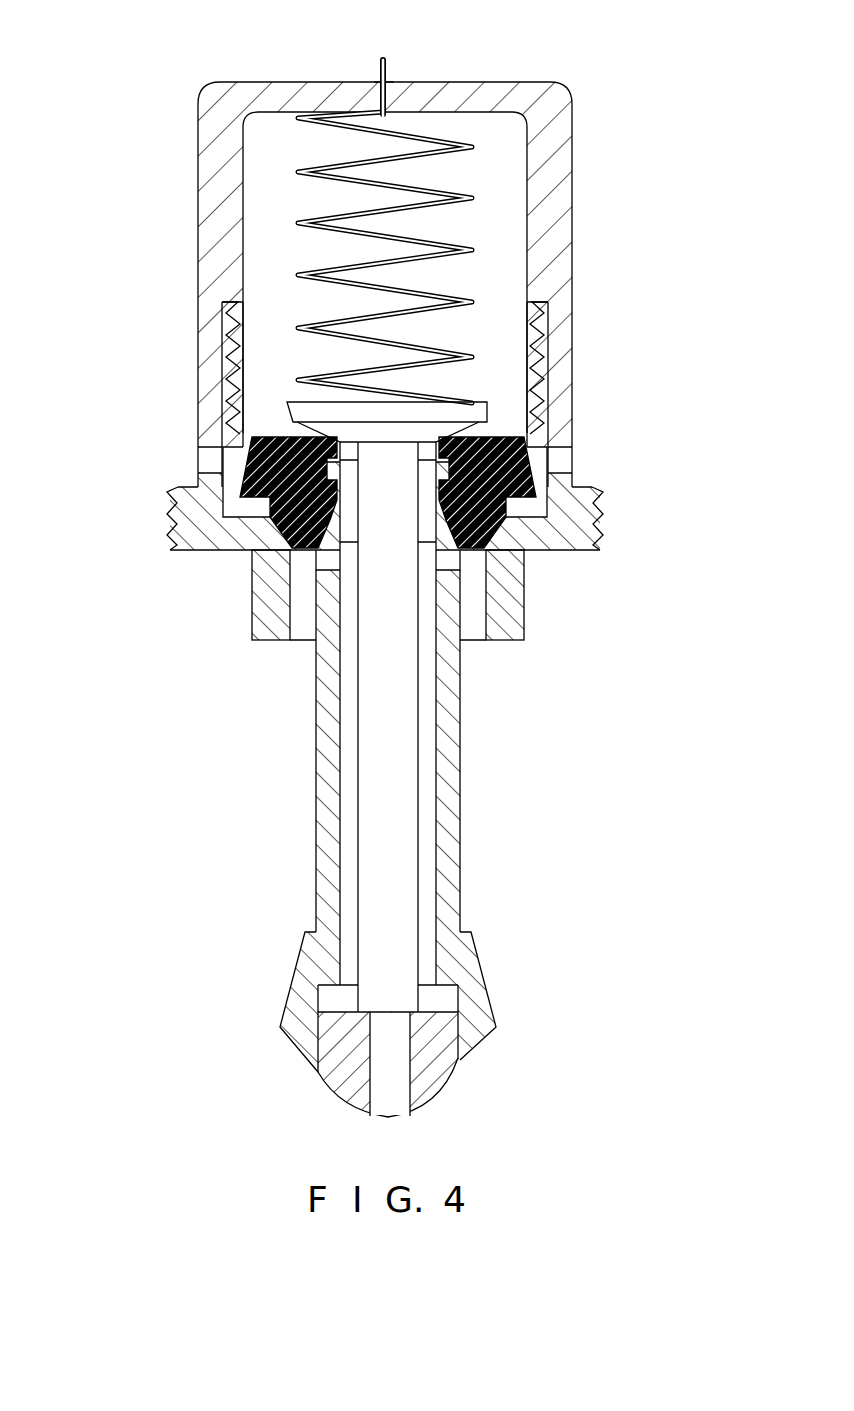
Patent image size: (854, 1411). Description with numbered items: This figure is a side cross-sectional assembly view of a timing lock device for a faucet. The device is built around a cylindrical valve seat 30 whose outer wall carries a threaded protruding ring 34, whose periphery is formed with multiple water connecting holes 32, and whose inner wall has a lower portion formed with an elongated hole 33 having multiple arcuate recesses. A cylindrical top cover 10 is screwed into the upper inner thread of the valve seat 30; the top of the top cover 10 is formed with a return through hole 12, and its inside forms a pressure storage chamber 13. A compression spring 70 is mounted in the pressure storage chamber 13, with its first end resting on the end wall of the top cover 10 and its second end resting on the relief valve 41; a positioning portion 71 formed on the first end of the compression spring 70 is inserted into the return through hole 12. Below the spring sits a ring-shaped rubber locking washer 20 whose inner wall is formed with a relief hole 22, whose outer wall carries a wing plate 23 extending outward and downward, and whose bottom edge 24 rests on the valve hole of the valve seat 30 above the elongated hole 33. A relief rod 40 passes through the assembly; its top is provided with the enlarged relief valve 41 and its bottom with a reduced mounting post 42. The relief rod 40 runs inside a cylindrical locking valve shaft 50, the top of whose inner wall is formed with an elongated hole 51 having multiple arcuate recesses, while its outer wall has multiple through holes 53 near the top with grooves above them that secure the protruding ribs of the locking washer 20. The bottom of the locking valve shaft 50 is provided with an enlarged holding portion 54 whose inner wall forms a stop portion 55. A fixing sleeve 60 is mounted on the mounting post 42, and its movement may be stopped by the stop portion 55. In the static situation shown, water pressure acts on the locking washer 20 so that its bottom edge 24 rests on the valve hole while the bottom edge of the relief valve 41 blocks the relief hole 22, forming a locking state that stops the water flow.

The top cover 10 is at (555, 203).
The return through hole 12 is at (413, 82).
The pressure storage chamber 13 is at (295, 153).
The locking washer 20 is at (503, 513).
The relief hole 22 is at (485, 413).
The wing plate 23 is at (527, 477).
The bottom edge 24 is at (277, 542).
The valve seat 30 is at (562, 372).
The water connecting holes 32 is at (210, 460).
The elongated hole 33 is at (472, 625).
The threaded protruding ring 34 is at (170, 502).
The relief rod 40 is at (375, 745).
The relief valve 41 is at (288, 405).
The mounting post 42 is at (388, 1088).
The locking valve shaft 50 is at (447, 818).
The elongated hole 51 is at (350, 513).
The through holes 53 is at (447, 562).
The holding portion 54 is at (306, 967).
The stop portion 55 is at (440, 972).
The fixing sleeve 60 is at (325, 1083).
The compression spring 70 is at (298, 223).
The positioning portion 71 is at (378, 65).